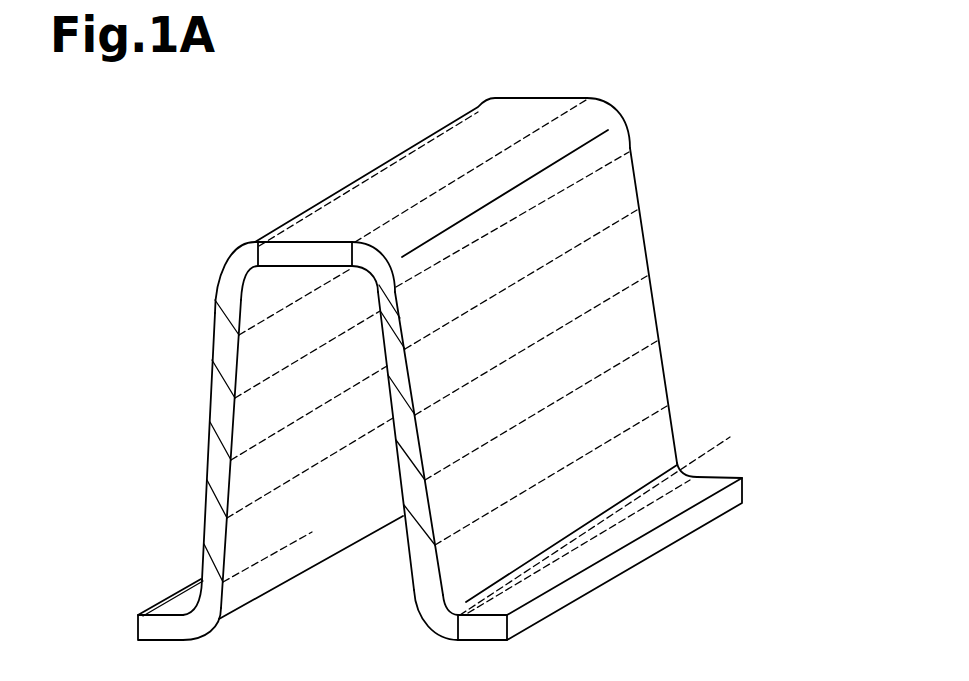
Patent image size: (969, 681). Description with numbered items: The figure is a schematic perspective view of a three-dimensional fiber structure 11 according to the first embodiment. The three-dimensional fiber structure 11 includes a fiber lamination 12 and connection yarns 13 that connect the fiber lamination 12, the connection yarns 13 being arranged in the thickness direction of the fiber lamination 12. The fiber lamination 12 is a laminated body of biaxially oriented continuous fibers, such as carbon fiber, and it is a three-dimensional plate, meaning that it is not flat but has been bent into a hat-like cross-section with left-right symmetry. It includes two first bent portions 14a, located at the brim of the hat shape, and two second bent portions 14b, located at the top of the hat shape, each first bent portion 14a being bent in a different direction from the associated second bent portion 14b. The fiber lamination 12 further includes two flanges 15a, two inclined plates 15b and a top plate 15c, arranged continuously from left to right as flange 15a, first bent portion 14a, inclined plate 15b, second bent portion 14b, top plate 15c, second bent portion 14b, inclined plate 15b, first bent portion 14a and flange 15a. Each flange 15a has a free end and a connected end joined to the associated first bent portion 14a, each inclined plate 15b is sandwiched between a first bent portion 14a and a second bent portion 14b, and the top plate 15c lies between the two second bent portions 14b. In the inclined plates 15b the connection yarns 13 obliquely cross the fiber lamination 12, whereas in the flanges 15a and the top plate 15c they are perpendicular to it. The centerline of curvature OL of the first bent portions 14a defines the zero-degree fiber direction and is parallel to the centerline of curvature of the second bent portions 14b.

The three-dimensional fiber structure 11 is at (412, 389).
The fiber lamination 12 is at (412, 389).
The connection yarns 13 is at (345, 258).
The first bent portions 14a is at (213, 615).
The second bent portions 14b is at (226, 266).
The flanges 15a is at (157, 610).
The inclined plates 15b is at (207, 400).
The top plate 15c is at (325, 208).
The centerline of curvature OL is at (180, 583).